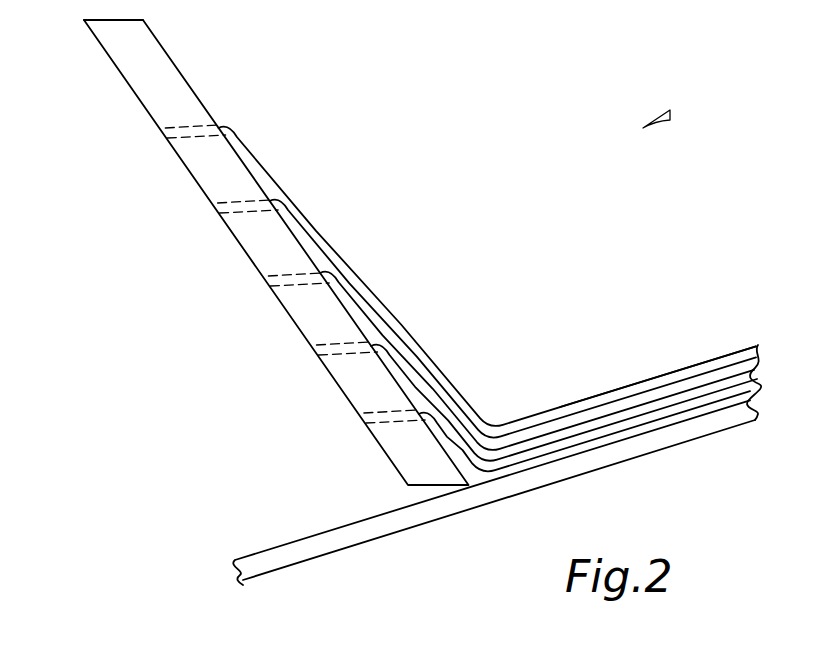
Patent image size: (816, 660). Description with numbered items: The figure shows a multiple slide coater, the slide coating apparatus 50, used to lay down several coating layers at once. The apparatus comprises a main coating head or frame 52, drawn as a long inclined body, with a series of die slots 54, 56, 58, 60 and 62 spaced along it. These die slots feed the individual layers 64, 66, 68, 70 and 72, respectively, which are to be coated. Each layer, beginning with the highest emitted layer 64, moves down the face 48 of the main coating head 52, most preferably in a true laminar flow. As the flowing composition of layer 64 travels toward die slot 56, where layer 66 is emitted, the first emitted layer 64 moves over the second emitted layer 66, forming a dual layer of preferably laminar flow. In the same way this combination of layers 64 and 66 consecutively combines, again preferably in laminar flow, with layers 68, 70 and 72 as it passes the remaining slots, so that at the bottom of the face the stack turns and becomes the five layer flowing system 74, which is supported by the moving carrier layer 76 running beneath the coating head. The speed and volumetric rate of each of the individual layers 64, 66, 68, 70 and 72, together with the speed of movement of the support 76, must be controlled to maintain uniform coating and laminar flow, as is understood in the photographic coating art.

The face of the main coating head 48 is at (192, 90).
The slide coating apparatus 50 is at (670, 118).
The main coating head 52 is at (100, 46).
The die slot 54 is at (165, 137).
The die slot 56 is at (220, 213).
The die slot 58 is at (268, 283).
The die slot 60 is at (318, 352).
The die slot 62 is at (366, 423).
The layer 64 is at (245, 162).
The layer 66 is at (293, 235).
The layer 68 is at (342, 305).
The layer 70 is at (393, 378).
The layer 72 is at (440, 447).
The five layer flowing system 74 is at (603, 393).
The moving carrier layer 76 is at (598, 468).